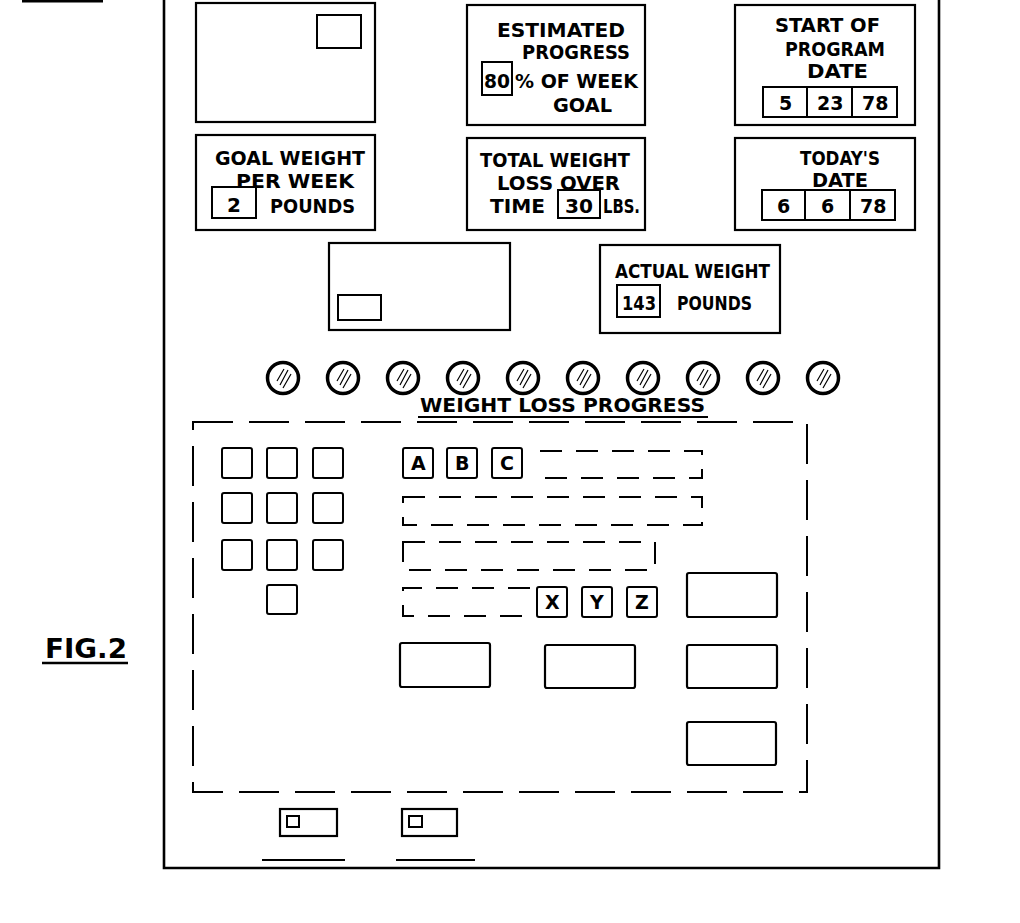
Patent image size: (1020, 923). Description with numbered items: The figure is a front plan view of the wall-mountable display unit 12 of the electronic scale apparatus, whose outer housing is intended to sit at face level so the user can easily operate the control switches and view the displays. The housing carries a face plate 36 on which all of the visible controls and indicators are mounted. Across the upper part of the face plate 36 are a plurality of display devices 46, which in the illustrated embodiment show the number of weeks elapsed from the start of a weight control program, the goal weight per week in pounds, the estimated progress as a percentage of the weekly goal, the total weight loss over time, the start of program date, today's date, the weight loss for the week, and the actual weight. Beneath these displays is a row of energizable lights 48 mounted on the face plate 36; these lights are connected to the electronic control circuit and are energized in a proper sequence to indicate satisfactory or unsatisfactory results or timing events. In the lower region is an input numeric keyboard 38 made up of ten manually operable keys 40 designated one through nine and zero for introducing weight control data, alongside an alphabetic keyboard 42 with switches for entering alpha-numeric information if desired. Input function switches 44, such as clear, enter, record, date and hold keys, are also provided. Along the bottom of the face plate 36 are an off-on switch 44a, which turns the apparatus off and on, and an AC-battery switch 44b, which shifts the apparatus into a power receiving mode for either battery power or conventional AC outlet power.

The display unit 12 is at (163, 262).
The face plate 36 is at (210, 318).
The input numeric keyboard 38 is at (318, 580).
The numeric data input keyboard switches 40 is at (280, 616).
The alphabetic keyboard 42 is at (710, 514).
The input function switches 44 is at (654, 696).
The off-on switch 44a is at (279, 816).
The AC-battery switch 44b is at (445, 825).
The display devices 46 is at (183, 78).
The energizable lights 48 is at (276, 362).